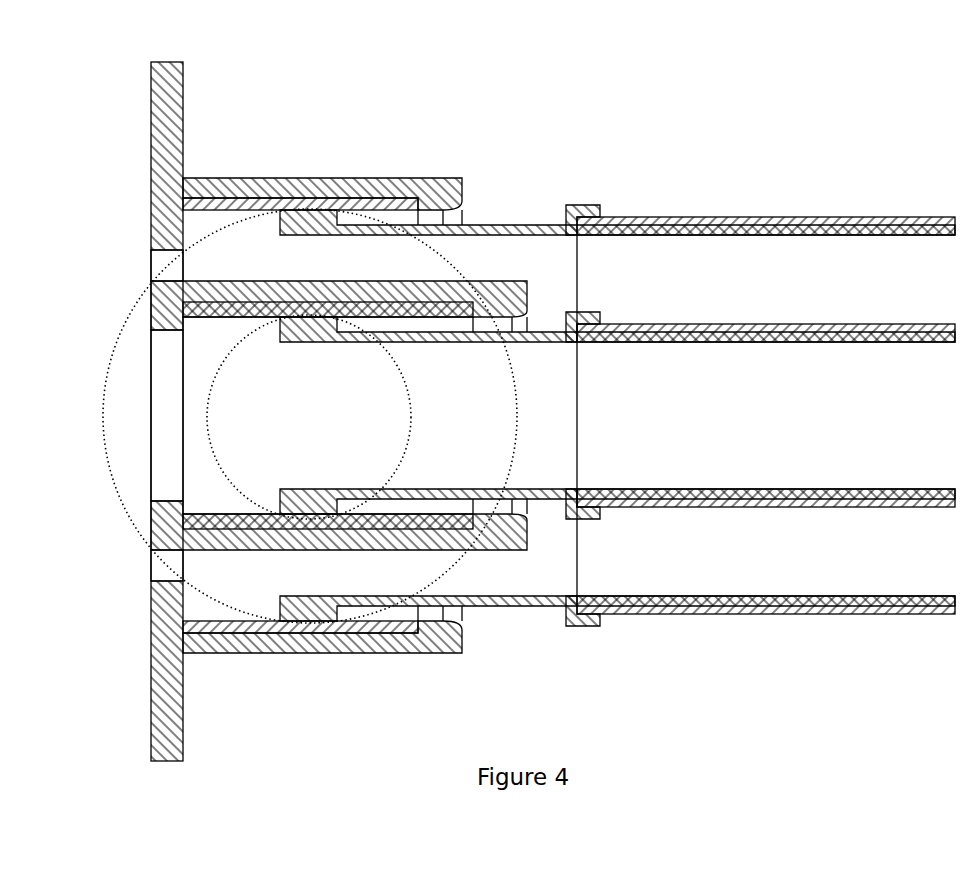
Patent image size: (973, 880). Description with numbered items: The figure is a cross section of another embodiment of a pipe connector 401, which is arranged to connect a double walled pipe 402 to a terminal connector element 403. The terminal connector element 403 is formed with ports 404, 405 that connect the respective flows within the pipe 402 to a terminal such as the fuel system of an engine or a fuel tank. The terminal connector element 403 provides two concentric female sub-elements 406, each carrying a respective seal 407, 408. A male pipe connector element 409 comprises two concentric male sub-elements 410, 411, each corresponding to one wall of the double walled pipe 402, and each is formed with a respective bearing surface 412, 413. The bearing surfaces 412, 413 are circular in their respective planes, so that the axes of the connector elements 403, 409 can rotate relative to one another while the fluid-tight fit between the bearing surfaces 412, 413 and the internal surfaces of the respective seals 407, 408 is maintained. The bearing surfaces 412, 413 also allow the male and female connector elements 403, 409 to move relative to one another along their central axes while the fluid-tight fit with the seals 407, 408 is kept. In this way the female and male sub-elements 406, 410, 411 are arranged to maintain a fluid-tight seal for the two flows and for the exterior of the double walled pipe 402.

The pipe connector 401 is at (752, 128).
The double walled pipe 402 is at (723, 217).
The terminal connector element 403 is at (168, 105).
The port 404 is at (157, 262).
The port 405 is at (157, 437).
The concentric female sub-element 406 is at (255, 190).
The seal 407 is at (283, 205).
The seal 408 is at (221, 514).
The male pipe connector element 409 is at (572, 205).
The concentric male sub-element 410 is at (482, 226).
The concentric male sub-element 411 is at (437, 502).
The bearing surface 412 is at (308, 622).
The bearing surface 413 is at (310, 280).